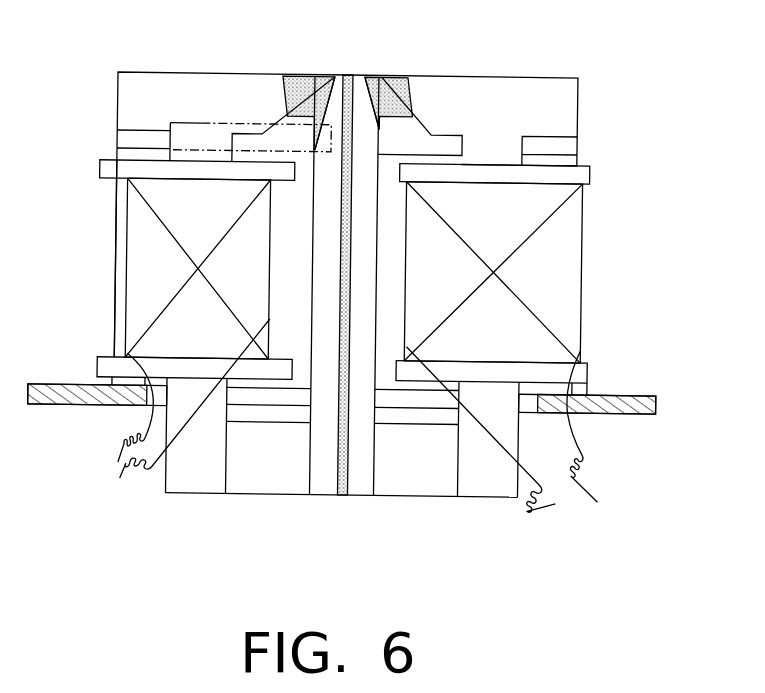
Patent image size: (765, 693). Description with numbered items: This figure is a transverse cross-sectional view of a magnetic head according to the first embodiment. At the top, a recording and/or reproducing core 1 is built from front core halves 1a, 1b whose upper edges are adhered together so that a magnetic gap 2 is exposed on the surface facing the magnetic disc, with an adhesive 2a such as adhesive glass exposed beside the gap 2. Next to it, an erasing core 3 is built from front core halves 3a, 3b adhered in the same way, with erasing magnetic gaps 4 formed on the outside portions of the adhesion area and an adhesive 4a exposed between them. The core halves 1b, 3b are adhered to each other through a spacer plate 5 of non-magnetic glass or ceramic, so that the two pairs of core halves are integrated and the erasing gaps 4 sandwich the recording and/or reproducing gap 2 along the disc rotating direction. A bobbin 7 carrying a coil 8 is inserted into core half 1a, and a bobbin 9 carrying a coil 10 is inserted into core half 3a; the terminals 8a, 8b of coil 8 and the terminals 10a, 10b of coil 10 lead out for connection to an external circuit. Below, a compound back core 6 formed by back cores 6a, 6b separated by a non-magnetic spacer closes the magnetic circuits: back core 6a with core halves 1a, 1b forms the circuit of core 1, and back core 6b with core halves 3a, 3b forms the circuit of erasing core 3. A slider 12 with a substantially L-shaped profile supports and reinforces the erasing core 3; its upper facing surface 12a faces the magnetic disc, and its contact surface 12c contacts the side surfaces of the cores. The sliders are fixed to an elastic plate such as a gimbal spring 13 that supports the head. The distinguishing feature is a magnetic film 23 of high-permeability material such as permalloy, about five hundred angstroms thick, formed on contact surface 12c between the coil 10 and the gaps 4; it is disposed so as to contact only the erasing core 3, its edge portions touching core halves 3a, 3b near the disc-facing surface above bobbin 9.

The recording and/or reproducing core 1 is at (562, 70).
The front core half 1a is at (482, 488).
The front core half 1b is at (362, 488).
The magnetic gap 2 is at (379, 74).
The adhesive 2a is at (404, 105).
The erasing core 3 is at (128, 62).
The front core half 3a is at (193, 486).
The front core half 3b is at (323, 486).
The magnetic gap 4 is at (317, 74).
The adhesive 4a is at (287, 112).
The spacer plate 5 is at (350, 73).
The compound back core 6 is at (256, 501).
The back core 6a is at (413, 487).
The back core 6b is at (275, 484).
The bobbin 7 is at (593, 170).
The coil 8 is at (567, 277).
The terminal 8a is at (595, 484).
The terminal 8b is at (557, 503).
The bobbin 9 is at (100, 167).
The coil 10 is at (133, 289).
The terminal 10a is at (112, 470).
The terminal 10b is at (128, 486).
The slider 12 is at (114, 243).
The facing surface 12a is at (495, 75).
The contact surface 12c is at (117, 138).
The gimbal spring 13 is at (610, 390).
The magnetic film 23 is at (232, 121).